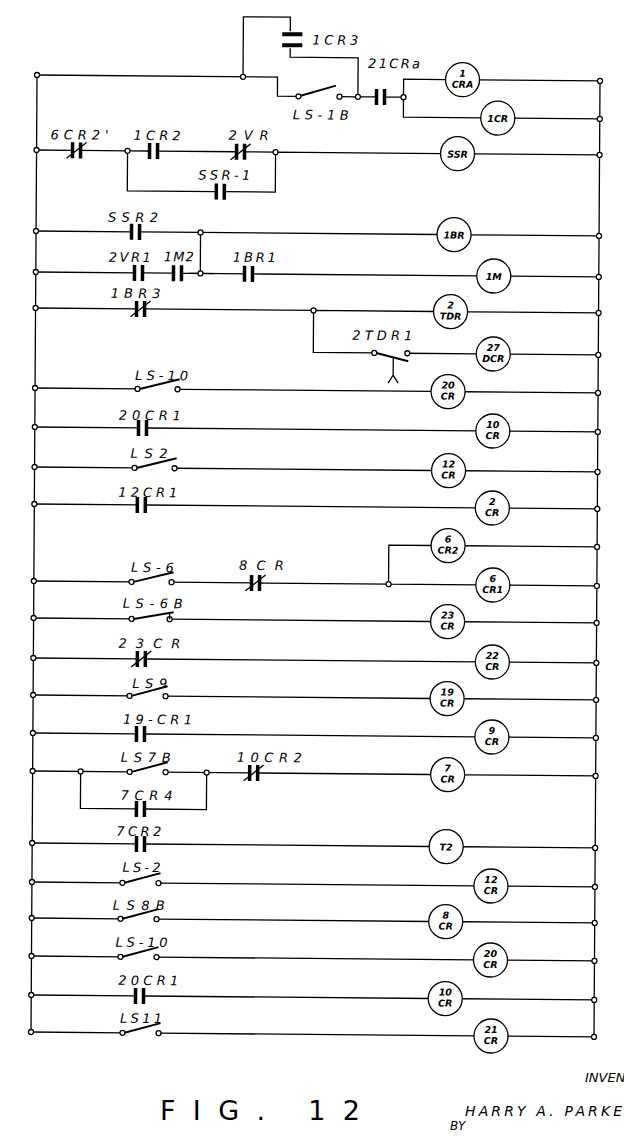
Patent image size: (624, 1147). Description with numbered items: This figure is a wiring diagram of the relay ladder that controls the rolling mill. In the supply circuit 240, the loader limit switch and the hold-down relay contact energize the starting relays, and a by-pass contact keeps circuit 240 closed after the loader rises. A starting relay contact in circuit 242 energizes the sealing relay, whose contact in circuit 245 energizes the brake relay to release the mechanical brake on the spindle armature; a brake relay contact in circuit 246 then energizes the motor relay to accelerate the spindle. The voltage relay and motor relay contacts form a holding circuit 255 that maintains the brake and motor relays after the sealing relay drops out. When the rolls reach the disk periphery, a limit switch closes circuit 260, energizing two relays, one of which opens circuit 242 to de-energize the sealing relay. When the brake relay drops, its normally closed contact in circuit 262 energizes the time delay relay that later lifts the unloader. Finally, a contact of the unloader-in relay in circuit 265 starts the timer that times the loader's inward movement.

The circuit 240 is at (197, 75).
The circuit 242 is at (193, 150).
The circuit 245 is at (202, 230).
The circuit 246 is at (300, 268).
The circuit 255 is at (197, 275).
The circuit 260 is at (336, 578).
The circuit 262 is at (223, 311).
The circuit 265 is at (279, 845).